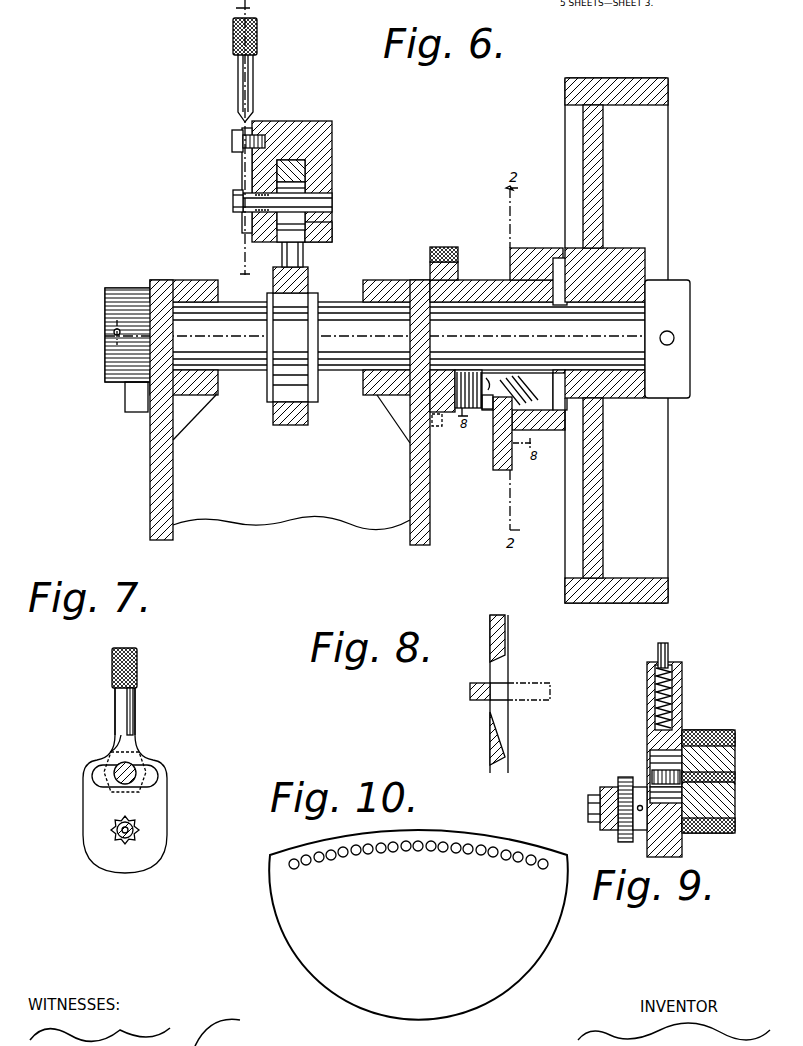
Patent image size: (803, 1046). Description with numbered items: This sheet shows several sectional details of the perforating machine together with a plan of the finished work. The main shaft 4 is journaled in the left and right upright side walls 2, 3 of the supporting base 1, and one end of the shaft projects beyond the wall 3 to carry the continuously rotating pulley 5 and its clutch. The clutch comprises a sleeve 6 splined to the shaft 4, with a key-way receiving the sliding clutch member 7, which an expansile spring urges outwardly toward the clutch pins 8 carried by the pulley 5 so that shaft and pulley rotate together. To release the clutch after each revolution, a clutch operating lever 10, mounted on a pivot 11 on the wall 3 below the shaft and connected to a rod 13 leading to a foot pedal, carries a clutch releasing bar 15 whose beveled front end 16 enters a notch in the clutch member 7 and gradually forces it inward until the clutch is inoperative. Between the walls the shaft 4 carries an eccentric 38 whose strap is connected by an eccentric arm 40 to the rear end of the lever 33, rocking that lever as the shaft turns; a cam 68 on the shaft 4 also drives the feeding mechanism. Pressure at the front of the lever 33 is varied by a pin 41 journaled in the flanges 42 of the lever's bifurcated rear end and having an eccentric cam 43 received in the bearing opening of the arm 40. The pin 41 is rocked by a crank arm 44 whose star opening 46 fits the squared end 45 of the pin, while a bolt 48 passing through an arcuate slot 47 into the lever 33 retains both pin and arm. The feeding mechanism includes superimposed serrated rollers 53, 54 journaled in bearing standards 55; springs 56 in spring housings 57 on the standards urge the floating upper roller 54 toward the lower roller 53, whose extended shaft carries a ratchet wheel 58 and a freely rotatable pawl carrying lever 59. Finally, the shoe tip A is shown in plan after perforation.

In FIG. 6, the supporting base 1 is at (292, 528).
In FIG. 6, the left hand upright side wall 2 is at (175, 495).
In FIG. 6, the right hand upright side wall 3 is at (410, 495).
In FIG. 6, the main shaft 4 is at (395, 302).
In FIG. 6, the continuously rotating pulley 5 is at (605, 490).
In FIG. 6, the sleeve 6 is at (482, 280).
In FIG. 8, the sliding clutch member 7 is at (470, 690).
In FIG. 6, the clutch pins 8 is at (600, 290).
In FIG. 6, the clutch operating lever 10 is at (505, 470).
In FIG. 8, the clutch operating lever 10 is at (508, 645).
In FIG. 6, the pivot 11 is at (495, 403).
In FIG. 6, the rod 13 is at (468, 389).
In FIG. 6, the clutch releasing bar 15 is at (490, 430).
In FIG. 8, the clutch releasing bar 15 is at (500, 712).
In FIG. 8, the beveled front end 16 is at (500, 742).
In FIG. 6, the lever 33 is at (332, 121).
In FIG. 6, the eccentric 38 is at (318, 393).
In FIG. 6, the eccentric arm 40 is at (303, 258).
In FIG. 6, the pin 41 is at (322, 203).
In FIG. 6, the flanges 42 is at (332, 232).
In FIG. 6, the eccentric cam 43 is at (332, 170).
In FIG. 6, the crank arm 44 is at (258, 92).
In FIG. 7, the crank arm 44 is at (138, 680).
In FIG. 6, the squared end 45 is at (240, 222).
In FIG. 7, the squared end 45 is at (138, 822).
In FIG. 7, the star opening 46 is at (128, 843).
In FIG. 7, the arcuate slot 47 is at (152, 770).
In FIG. 6, the bolt 48 is at (232, 143).
In FIG. 7, the bolt 48 is at (105, 770).
In FIG. 9, the lower serrated roller 53 is at (740, 804).
In FIG. 9, the upper serrated roller 54 is at (740, 745).
In FIG. 9, the bearing standards 55 is at (647, 850).
In FIG. 9, the springs 56 is at (676, 702).
In FIG. 9, the spring housings 57 is at (682, 664).
In FIG. 9, the ratchet wheel 58 is at (625, 777).
In FIG. 9, the pawl carrying lever 59 is at (603, 787).
In FIG. 6, the cam 68 is at (128, 412).
In FIG. 10, the shoe tip A is at (418, 925).